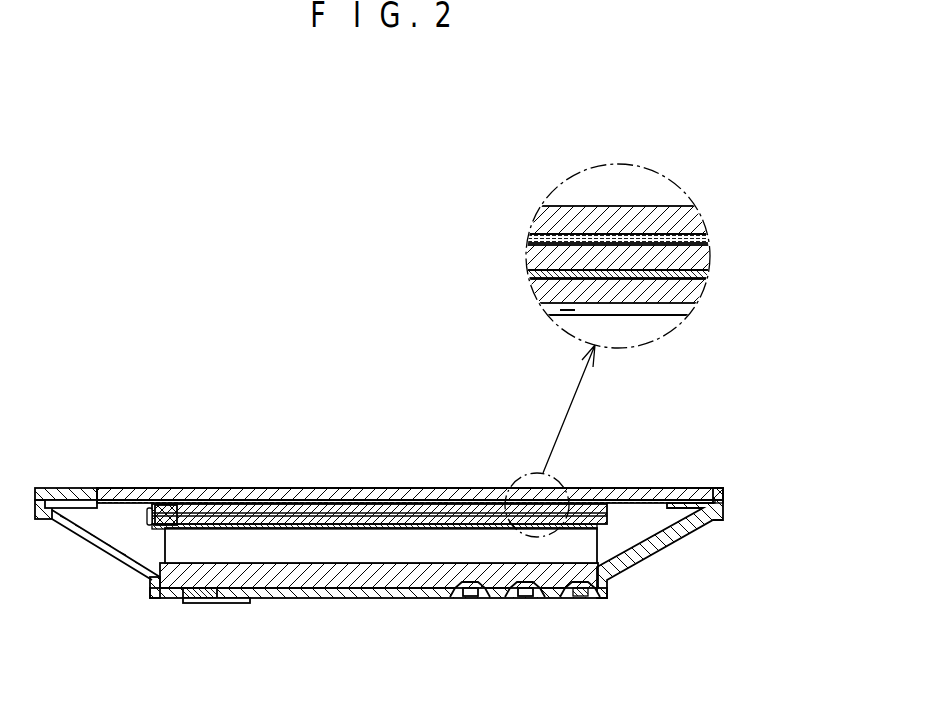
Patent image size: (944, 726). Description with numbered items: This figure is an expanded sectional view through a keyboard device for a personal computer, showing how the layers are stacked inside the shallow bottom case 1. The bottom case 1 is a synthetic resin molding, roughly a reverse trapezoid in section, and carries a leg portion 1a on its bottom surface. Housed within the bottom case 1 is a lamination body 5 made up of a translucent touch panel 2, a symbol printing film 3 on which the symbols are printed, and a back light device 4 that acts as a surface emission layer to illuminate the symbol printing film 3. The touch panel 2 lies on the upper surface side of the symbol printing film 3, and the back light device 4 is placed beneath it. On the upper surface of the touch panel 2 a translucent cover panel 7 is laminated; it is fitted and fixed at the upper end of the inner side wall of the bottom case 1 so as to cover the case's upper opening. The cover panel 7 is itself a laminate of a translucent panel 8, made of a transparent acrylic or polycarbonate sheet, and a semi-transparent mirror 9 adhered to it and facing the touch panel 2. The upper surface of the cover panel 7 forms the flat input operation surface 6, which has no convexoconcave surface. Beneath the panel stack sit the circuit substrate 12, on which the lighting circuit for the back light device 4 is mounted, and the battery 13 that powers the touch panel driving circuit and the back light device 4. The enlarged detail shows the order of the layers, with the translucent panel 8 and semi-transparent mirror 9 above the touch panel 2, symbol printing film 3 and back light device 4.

The bottom case 1 is at (667, 542).
The leg portion 1a is at (578, 600).
The touch panel 2 is at (690, 257).
The symbol printing film 3 is at (690, 278).
The back light device 4 is at (690, 296).
The lamination body 5 is at (148, 515).
The input operation surface 6 is at (225, 488).
The cover panel 7 is at (797, 408).
The translucent panel 8 is at (623, 491).
The semi-transparent mirror 9 is at (680, 500).
The substrate 12 is at (288, 575).
The battery 13 is at (383, 572).